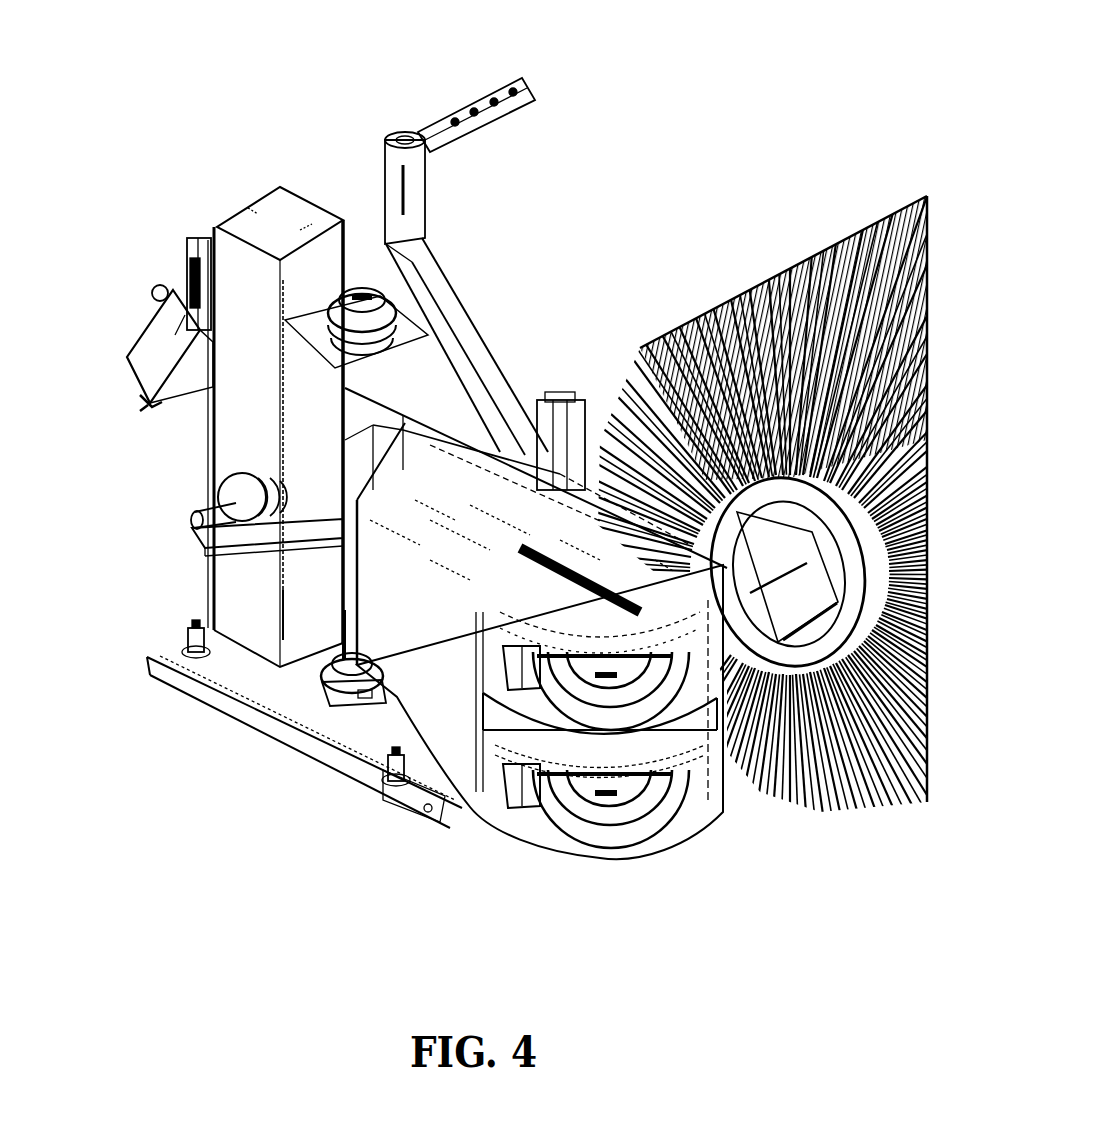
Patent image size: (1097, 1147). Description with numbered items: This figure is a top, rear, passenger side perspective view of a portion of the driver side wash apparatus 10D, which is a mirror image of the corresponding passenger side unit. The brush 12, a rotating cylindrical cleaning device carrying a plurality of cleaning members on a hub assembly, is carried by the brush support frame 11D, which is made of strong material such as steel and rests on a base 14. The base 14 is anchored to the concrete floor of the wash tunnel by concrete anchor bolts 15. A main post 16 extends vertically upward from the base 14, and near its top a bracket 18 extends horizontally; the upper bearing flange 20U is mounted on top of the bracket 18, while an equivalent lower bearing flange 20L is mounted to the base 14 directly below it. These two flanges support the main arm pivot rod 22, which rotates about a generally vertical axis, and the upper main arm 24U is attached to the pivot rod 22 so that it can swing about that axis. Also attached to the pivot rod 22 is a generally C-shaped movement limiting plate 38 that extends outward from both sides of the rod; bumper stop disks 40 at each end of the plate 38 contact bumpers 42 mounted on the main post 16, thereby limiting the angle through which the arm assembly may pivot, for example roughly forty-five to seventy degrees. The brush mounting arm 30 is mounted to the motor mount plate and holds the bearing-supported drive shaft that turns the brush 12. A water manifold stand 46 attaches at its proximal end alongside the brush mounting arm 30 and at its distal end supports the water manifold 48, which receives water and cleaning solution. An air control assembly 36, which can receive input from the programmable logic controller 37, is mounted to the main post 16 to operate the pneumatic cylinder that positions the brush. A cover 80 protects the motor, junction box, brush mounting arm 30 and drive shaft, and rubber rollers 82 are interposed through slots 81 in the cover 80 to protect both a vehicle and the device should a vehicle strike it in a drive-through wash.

The driver side wash apparatus 10D is at (235, 89).
The brush support frame 11D is at (795, 881).
The brush 12 is at (712, 312).
The base 14 is at (287, 720).
The concrete anchor bolts 15 is at (186, 639).
The main post 16 is at (245, 200).
The bracket 18 is at (302, 347).
The upper bearing flange 20U is at (372, 284).
The lower bearing flange 20L is at (350, 706).
The main arm pivot rod 22 is at (340, 558).
The upper main arm 24U is at (372, 413).
The brush mounting arm 30 is at (765, 633).
The air control assembly 36 is at (150, 342).
The programmable logic controller 37 is at (185, 240).
The movement limiting plate 38 is at (290, 520).
The bumper stop disks 40 is at (200, 509).
The bumpers 42 is at (242, 485).
The water manifold stand 46 is at (504, 378).
The water manifold 48 is at (525, 101).
The cover 80 is at (548, 830).
The slots 81 is at (513, 793).
The rollers 82 is at (637, 710).